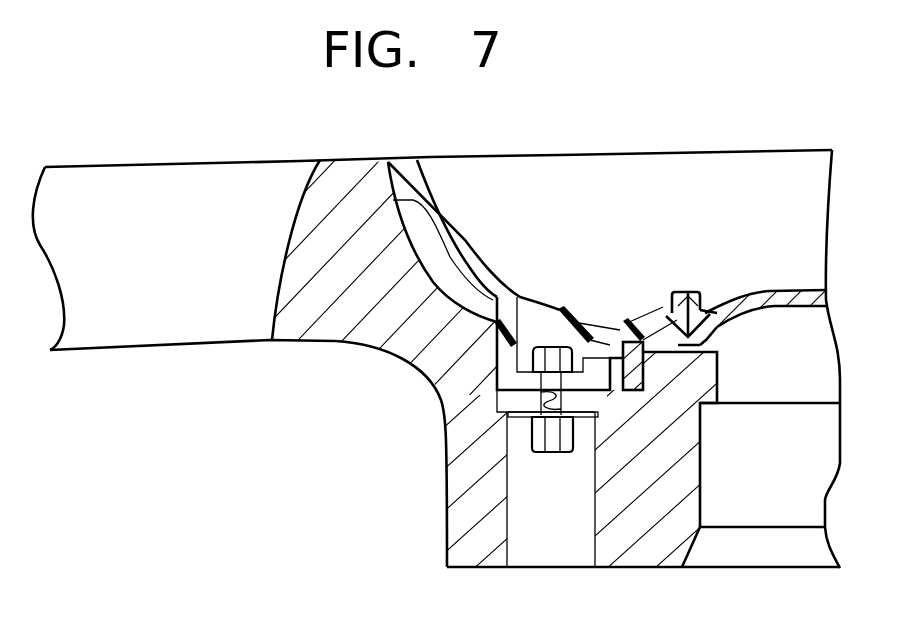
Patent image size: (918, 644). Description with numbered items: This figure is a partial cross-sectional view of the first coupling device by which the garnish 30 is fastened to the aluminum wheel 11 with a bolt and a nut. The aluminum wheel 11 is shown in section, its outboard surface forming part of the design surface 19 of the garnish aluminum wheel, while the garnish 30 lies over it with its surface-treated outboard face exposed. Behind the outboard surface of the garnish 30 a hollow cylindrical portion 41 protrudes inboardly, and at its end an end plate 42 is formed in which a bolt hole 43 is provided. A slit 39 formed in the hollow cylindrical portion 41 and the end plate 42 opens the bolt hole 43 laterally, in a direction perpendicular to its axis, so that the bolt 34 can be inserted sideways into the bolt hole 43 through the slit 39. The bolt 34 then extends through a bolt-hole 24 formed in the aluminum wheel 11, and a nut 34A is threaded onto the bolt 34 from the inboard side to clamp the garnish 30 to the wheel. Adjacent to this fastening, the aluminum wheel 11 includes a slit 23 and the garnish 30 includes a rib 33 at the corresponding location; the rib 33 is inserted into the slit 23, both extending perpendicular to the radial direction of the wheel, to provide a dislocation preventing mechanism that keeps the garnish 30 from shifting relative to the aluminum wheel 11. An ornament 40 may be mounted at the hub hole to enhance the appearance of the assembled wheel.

The aluminum wheel 11 is at (353, 178).
The bolt 34 is at (545, 320).
The design surface 19 is at (548, 346).
The slit 39 is at (576, 345).
The rib 33 is at (636, 370).
The garnish 30 is at (648, 303).
The ornament 40 is at (788, 290).
The hollow cylindrical portion 41 is at (498, 343).
The end plate 42 is at (538, 383).
The bolt hole 43 is at (530, 400).
The bolt-hole 24 is at (530, 437).
The nut 34A is at (550, 455).
The slit 23 is at (632, 395).